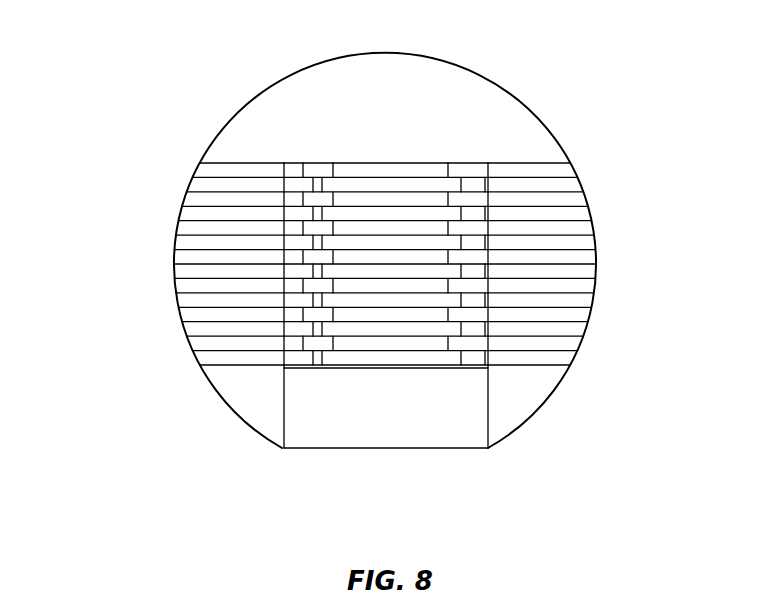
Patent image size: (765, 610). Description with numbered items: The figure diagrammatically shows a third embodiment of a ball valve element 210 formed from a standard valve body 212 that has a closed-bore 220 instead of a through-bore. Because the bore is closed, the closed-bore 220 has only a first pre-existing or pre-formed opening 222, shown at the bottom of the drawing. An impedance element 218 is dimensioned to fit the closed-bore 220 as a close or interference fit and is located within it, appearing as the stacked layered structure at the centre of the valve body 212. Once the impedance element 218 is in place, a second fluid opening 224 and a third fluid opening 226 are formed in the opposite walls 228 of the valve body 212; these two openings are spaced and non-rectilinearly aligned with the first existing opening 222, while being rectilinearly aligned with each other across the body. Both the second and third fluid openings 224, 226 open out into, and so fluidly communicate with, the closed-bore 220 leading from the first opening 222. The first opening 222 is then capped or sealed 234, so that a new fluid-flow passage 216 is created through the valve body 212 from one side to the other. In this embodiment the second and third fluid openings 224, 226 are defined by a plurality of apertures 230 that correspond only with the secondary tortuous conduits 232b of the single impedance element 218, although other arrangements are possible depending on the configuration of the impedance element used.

The ball valve element 210 is at (177, 49).
The valve body 212 is at (523, 103).
The fluid-flow passage 216 is at (570, 289).
The impedance element 218 is at (428, 346).
The closed-bore 220 is at (297, 162).
The first pre-existing opening 222 is at (316, 372).
The second fluid opening 224 is at (173, 275).
The third fluid opening 226 is at (596, 201).
The opposite walls 228 is at (570, 157).
The apertures 230 is at (177, 232).
The secondary tortuous conduits 232b is at (472, 183).
The cap or seal 234 is at (363, 370).